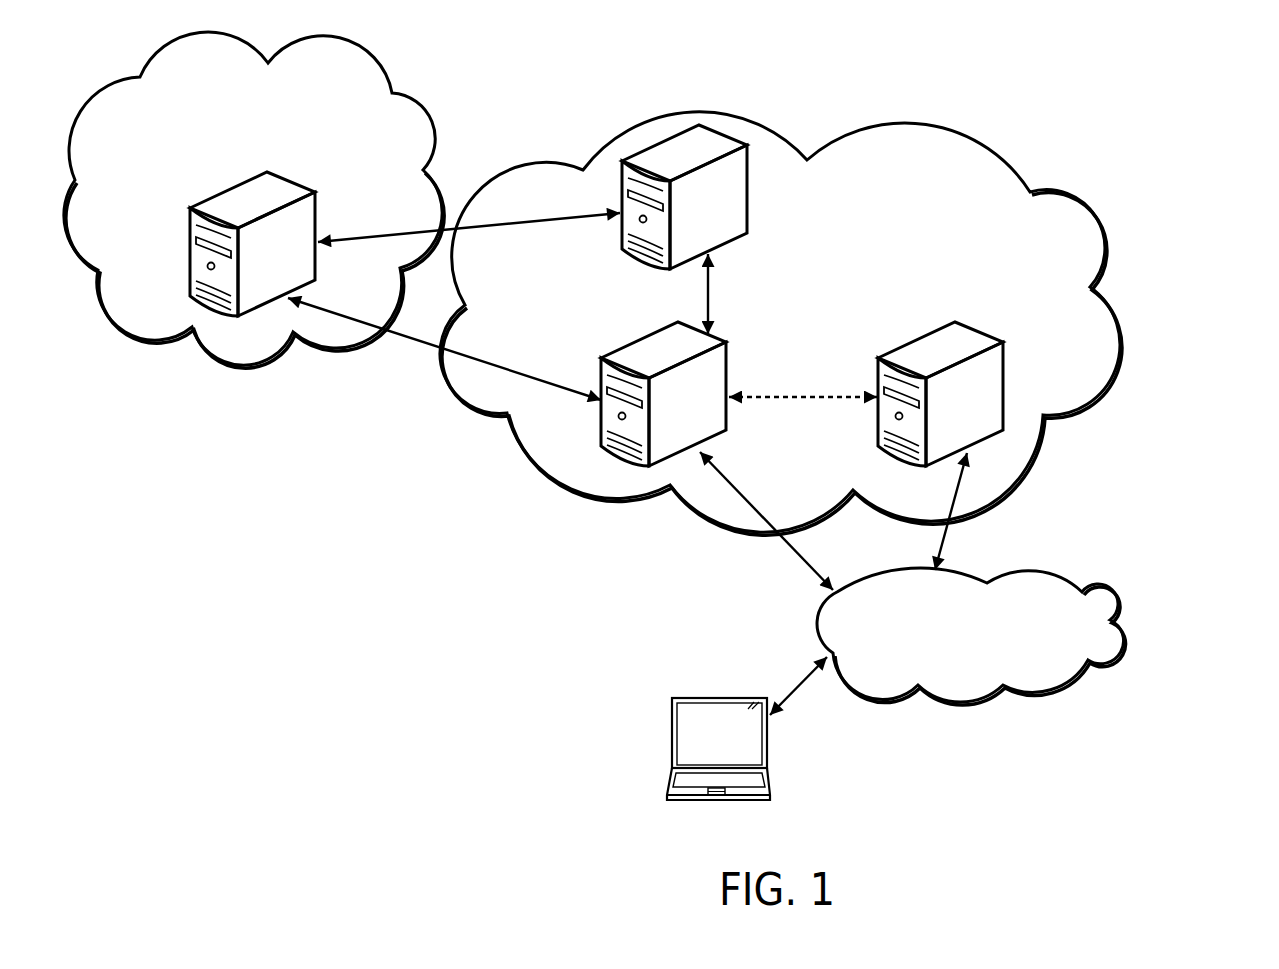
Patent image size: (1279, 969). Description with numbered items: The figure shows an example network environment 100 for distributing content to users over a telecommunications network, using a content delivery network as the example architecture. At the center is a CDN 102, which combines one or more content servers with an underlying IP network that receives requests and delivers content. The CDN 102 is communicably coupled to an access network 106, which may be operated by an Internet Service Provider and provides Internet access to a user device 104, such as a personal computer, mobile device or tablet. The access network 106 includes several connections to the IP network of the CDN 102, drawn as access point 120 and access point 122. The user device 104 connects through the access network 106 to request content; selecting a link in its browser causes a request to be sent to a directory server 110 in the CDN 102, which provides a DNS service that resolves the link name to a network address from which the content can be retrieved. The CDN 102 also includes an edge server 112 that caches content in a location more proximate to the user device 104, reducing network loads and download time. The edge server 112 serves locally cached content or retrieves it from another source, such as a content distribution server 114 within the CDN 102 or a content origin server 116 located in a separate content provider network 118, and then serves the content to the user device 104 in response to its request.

The network environment 100 is at (1165, 170).
The CDN 102 is at (926, 279).
The user device 104 is at (672, 767).
The access network 106 is at (952, 656).
The directory server 110 is at (1005, 372).
The edge server 112 is at (636, 342).
The content distribution server 114 is at (748, 217).
The content origin server 116 is at (190, 253).
The content provider network 118 is at (235, 145).
The access point 120 is at (810, 567).
The access point 122 is at (945, 535).